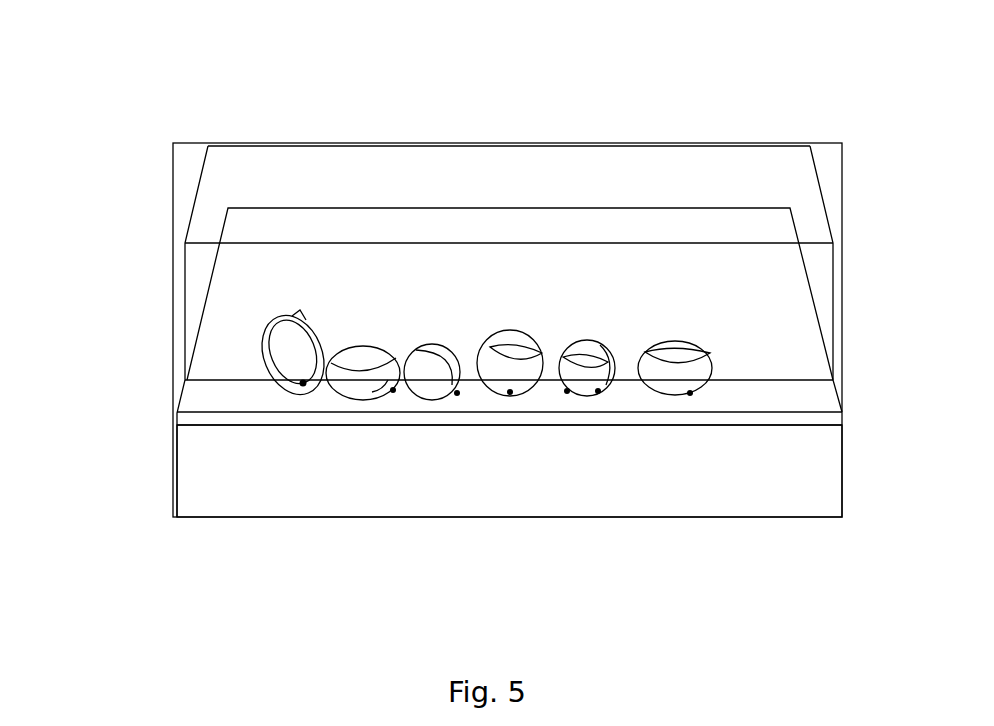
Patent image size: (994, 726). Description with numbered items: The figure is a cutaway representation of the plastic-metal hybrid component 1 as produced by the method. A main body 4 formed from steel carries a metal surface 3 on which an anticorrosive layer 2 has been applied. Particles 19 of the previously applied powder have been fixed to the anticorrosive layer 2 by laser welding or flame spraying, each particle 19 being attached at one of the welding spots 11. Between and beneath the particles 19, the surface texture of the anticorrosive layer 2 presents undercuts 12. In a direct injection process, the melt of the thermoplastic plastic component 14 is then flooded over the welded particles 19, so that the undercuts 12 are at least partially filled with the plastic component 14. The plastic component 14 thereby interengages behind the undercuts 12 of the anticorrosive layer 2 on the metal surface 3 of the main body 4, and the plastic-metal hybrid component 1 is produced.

The plastic-metal hybrid component 1 is at (733, 532).
The anticorrosive layer 2 is at (813, 405).
The metal surface 3 is at (828, 422).
The main body 4 is at (815, 473).
The welding spot 11 is at (287, 382).
The undercut 12 is at (407, 353).
The thermoplastic plastic component 14 is at (336, 228).
The particle 19 is at (272, 357).